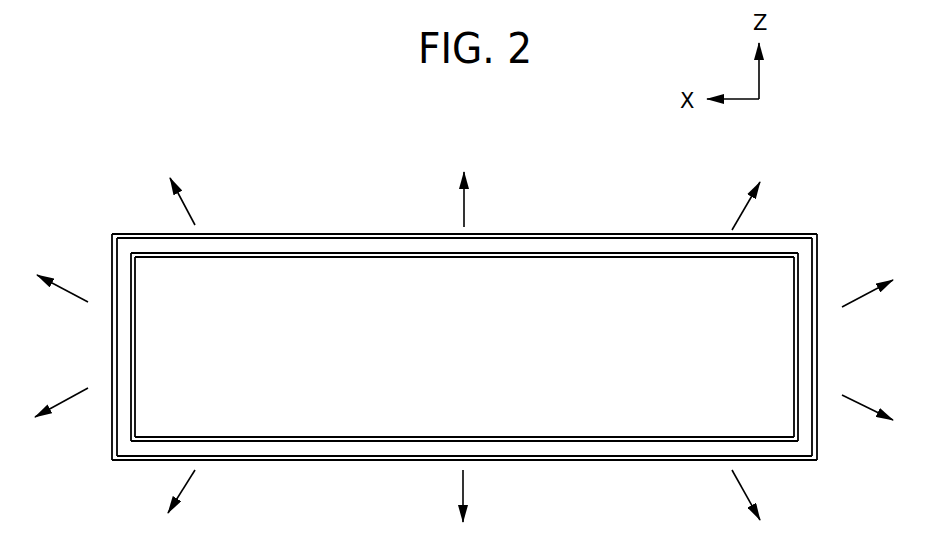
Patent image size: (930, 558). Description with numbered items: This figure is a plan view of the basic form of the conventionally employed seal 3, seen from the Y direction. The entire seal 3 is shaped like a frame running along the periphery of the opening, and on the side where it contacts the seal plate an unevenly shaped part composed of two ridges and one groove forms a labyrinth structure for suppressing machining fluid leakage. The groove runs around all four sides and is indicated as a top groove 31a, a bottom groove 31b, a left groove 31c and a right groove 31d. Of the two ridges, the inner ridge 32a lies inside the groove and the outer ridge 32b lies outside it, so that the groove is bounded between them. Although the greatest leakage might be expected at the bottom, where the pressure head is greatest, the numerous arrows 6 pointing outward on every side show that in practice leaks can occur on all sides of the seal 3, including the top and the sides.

The seal 3 is at (370, 222).
The top groove 31a is at (585, 248).
The bottom groove 31b is at (585, 450).
The left groove 31c is at (123, 346).
The right groove 31d is at (805, 350).
The inner ridge 32a is at (375, 441).
The outer ridge 32b is at (312, 460).
The arrows 6 is at (188, 208).